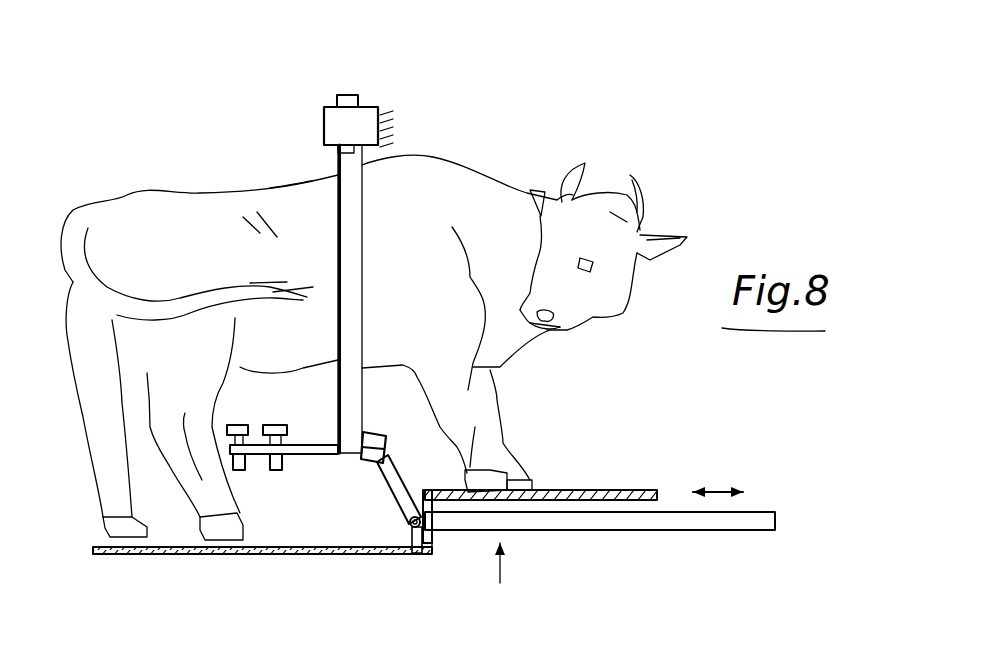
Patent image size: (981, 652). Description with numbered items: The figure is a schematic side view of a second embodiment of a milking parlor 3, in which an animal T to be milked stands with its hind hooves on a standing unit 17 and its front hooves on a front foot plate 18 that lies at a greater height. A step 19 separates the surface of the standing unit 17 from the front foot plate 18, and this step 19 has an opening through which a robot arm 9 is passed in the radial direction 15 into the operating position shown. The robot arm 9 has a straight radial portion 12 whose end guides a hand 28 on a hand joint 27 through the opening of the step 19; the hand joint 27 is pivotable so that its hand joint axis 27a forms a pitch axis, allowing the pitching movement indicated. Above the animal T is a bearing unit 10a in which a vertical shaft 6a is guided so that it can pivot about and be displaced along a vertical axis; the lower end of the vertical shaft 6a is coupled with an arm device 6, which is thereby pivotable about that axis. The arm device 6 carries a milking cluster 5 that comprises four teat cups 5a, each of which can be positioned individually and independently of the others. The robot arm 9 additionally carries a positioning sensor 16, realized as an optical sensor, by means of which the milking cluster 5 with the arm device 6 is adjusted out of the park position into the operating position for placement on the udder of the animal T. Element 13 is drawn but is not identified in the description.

The milking parlor 3 is at (155, 160).
The animal T is at (288, 185).
The arm device 6 is at (372, 243).
The vertical shaft 6a is at (352, 142).
The bearing unit 10a is at (360, 120).
The milking cluster 5 is at (267, 477).
The teat cups 5a is at (275, 422).
The clamp block 13 is at (385, 457).
The positioning sensor 16 is at (370, 460).
The hand 28 is at (406, 524).
The hand joint 27 is at (402, 534).
The hand joint axis 27a is at (415, 553).
The step 19 is at (433, 540).
The front foot plate 18 is at (590, 490).
The robot arm 9 is at (578, 538).
The radial portion 12 is at (508, 578).
The radial direction 15 is at (717, 487).
The standing unit 17 is at (263, 550).